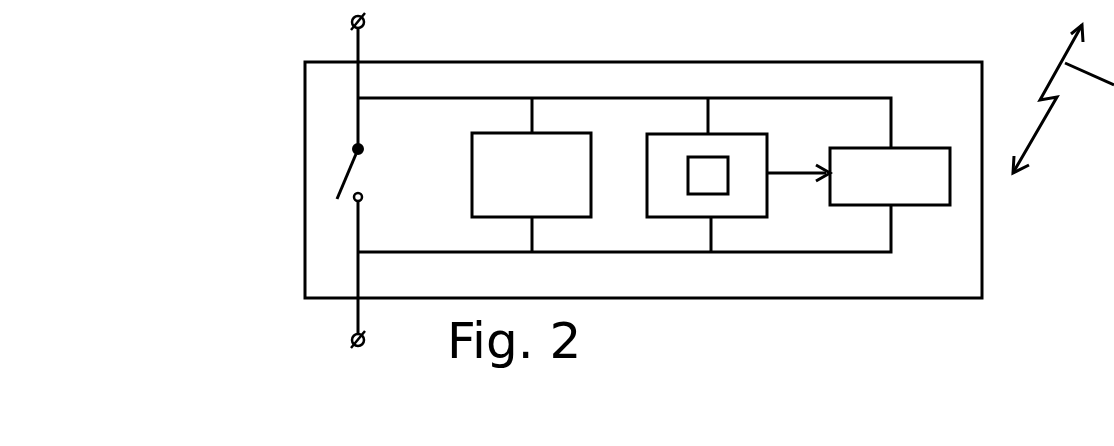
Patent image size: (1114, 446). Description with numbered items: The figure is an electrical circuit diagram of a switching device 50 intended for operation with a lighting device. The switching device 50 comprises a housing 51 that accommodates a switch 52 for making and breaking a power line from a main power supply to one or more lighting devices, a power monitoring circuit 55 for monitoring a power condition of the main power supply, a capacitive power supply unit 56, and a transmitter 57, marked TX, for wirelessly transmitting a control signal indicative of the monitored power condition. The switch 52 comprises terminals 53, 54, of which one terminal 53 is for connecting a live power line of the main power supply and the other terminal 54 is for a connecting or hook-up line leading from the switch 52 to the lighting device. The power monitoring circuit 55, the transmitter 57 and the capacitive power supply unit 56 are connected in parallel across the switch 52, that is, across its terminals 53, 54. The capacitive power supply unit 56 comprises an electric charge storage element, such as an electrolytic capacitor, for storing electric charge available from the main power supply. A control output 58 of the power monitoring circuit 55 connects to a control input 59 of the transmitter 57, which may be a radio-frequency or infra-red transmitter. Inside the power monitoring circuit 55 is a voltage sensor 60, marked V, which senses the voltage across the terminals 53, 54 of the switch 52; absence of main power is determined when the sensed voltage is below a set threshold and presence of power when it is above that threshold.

The switching device 50 is at (673, 180).
The housing 51 is at (443, 60).
The switch 52 is at (348, 175).
The terminal 53 is at (352, 19).
The terminal 54 is at (352, 336).
The power monitoring circuit 55 is at (705, 114).
The capacitive power supply unit 56 is at (552, 147).
The transmitter 57 is at (918, 150).
The control output 58 is at (768, 168).
The control input 59 is at (828, 167).
The voltage sensor 60 is at (700, 156).